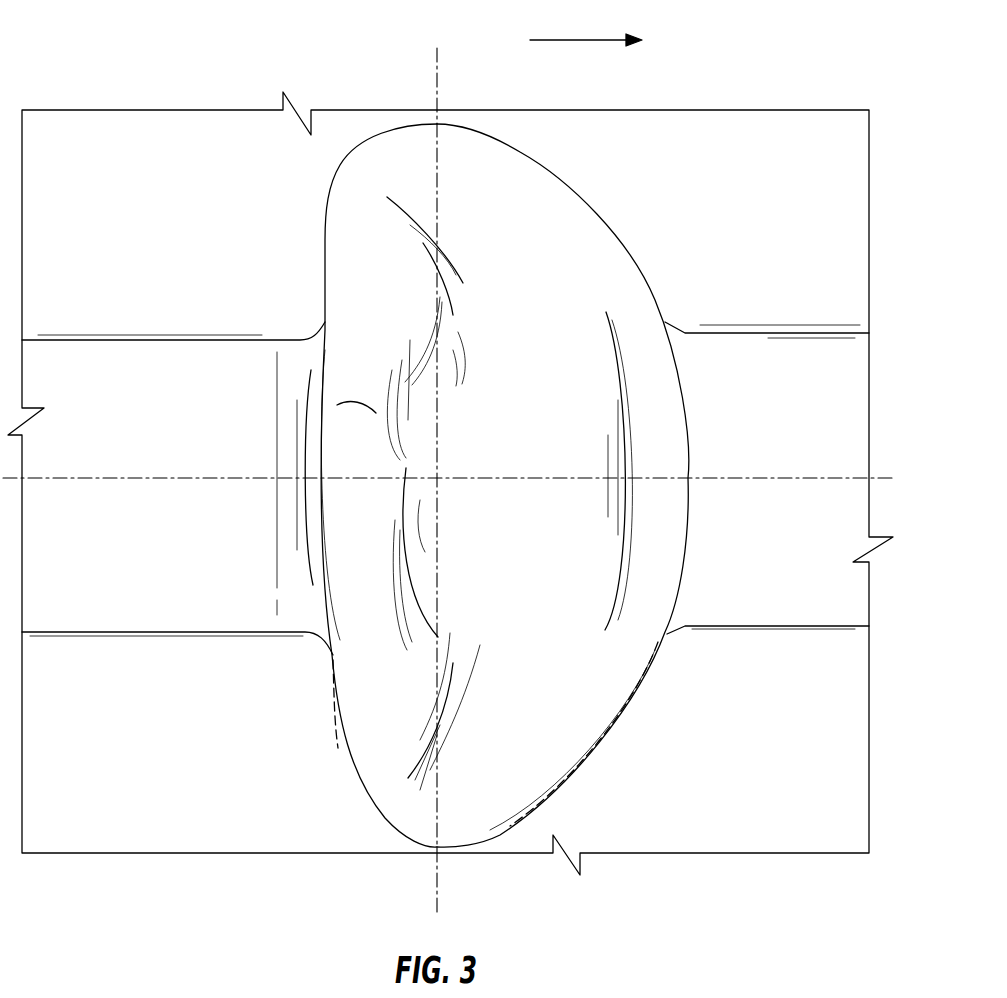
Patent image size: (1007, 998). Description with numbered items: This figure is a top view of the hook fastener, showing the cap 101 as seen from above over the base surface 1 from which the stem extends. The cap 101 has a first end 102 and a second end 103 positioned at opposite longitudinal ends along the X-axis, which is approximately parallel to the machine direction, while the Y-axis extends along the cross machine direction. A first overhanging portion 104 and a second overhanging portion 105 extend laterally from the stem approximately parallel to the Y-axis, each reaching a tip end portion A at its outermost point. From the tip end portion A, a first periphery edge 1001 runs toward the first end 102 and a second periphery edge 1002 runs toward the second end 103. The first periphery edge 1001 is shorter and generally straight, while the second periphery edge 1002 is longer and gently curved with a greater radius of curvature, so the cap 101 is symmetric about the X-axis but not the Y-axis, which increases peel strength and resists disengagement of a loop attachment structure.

The base surface 1 is at (803, 415).
The cap 101 is at (543, 272).
The first end 102 is at (350, 490).
The second end 103 is at (660, 403).
The first overhanging portion 104 is at (415, 165).
The second overhanging portion 105 is at (540, 763).
The first periphery edge 1001 is at (328, 202).
The second periphery edge 1002 is at (518, 152).